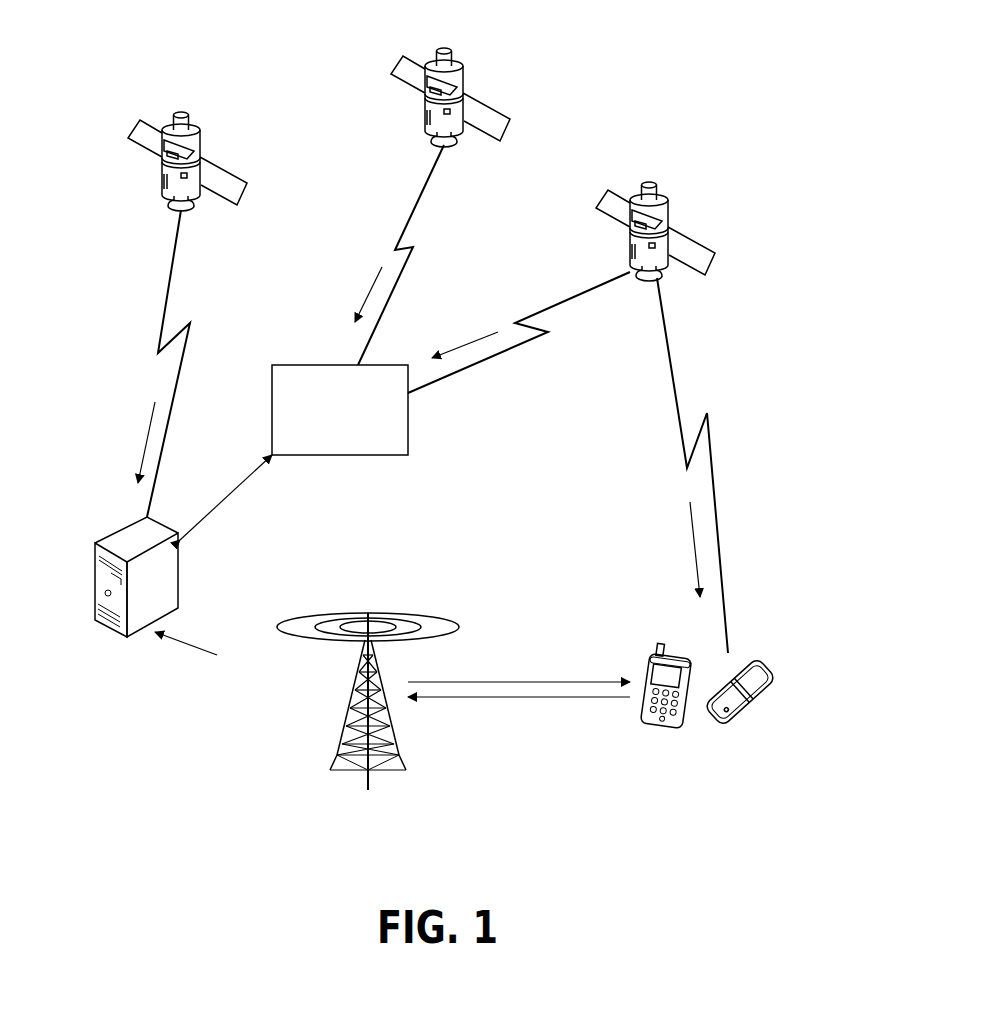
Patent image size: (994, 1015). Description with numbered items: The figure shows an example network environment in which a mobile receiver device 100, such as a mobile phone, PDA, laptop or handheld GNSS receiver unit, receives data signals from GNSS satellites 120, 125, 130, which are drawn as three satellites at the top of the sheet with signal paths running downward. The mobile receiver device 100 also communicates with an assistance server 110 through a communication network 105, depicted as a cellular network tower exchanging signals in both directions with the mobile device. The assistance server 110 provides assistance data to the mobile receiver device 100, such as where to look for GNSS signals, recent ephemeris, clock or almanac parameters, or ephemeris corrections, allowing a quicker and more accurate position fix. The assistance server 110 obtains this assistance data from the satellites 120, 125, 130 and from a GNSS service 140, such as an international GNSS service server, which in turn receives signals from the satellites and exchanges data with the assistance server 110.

The mobile receiver device 100 is at (698, 737).
The communication network 105 is at (342, 783).
The assistance server 110 is at (136, 640).
The GNSS satellite 120 is at (671, 186).
The GNSS satellite 125 is at (470, 63).
The GNSS satellite 130 is at (162, 112).
The GNSS service 140 is at (300, 352).